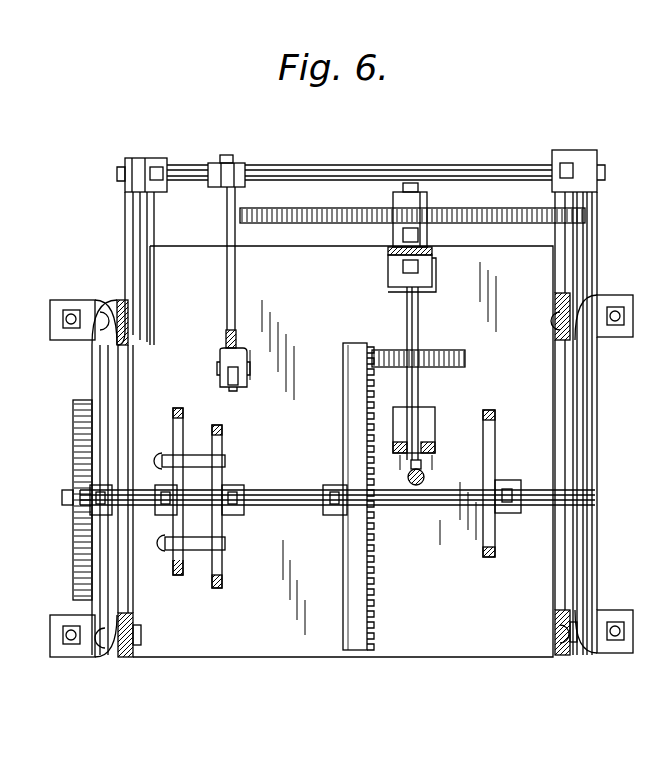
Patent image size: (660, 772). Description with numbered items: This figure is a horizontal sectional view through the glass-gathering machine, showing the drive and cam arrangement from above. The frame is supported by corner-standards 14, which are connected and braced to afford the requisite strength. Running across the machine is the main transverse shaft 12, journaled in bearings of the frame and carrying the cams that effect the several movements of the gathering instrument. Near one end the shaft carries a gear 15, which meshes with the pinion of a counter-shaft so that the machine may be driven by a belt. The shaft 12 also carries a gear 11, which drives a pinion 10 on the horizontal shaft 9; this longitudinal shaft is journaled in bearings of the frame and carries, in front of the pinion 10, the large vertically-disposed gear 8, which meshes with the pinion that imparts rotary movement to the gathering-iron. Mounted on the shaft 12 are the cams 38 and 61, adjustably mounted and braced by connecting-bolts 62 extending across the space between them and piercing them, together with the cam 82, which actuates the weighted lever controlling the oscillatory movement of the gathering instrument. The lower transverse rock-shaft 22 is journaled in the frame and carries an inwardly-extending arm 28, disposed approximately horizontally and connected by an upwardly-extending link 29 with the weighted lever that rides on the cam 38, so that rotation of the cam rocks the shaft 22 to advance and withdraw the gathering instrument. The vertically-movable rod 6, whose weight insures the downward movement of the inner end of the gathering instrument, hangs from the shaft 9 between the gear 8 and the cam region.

The vertically-movable rod 6 is at (408, 477).
The large vertically-disposed gear 8 is at (485, 212).
The horizontal shaft 9 is at (419, 310).
The pinion 10 is at (465, 360).
The gear 11 is at (343, 437).
The main transverse shaft 12 is at (285, 506).
The supporting corner-standards 14 is at (125, 305).
The gear 15 is at (73, 470).
The lower transverse rock-shaft 22 is at (322, 172).
The inwardly-extending arm 28 is at (236, 286).
The upwardly-extending link 29 is at (226, 340).
The cam 38 is at (222, 580).
The cam 61 is at (174, 565).
The connecting-bolts 62 is at (195, 458).
The cam 82 is at (495, 450).